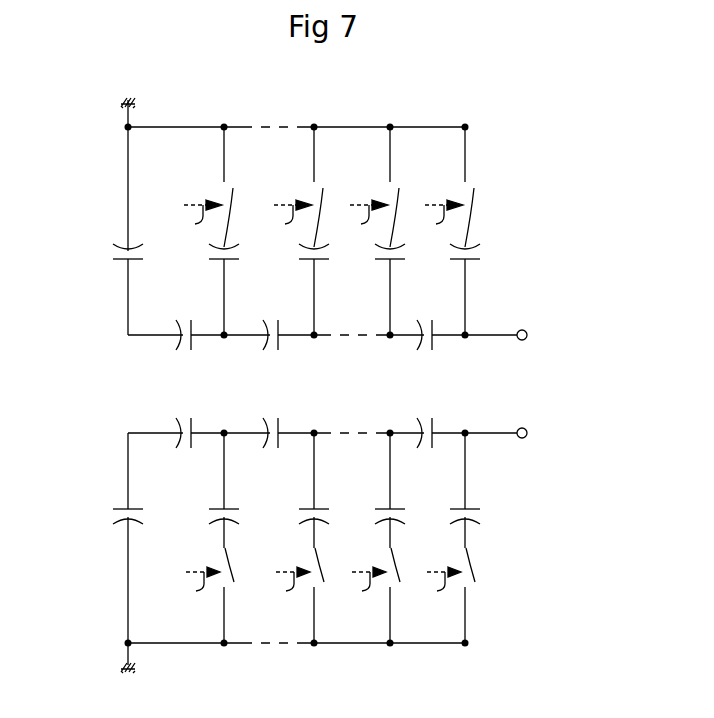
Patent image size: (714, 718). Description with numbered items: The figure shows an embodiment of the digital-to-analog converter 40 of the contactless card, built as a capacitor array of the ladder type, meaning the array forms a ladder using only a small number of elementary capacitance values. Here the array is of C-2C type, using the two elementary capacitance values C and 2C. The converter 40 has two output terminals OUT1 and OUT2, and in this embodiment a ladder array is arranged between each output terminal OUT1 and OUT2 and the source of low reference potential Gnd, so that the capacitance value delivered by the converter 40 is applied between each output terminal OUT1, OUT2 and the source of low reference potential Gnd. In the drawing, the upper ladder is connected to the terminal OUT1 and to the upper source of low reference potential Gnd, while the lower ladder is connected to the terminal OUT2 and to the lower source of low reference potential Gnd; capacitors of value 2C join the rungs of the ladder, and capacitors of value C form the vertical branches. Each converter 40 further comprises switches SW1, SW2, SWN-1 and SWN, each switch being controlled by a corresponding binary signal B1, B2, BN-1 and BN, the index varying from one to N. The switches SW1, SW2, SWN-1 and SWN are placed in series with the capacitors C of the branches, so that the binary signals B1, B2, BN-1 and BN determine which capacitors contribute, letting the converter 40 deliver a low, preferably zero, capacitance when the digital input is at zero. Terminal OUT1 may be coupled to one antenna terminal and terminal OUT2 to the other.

The digital-to-analog converter 40 is at (73, 190).
The source of low reference potential Gnd is at (124, 100).
The output terminal OUT1 is at (524, 330).
The output terminal OUT2 is at (524, 438).
The elementary capacitance value C is at (278, 384).
The elementary capacitance value 2C is at (298, 384).
The switch SW1 is at (234, 190).
The switch SW2 is at (324, 190).
The switch SWN-1 is at (400, 190).
The switch SWN is at (475, 190).
The binary signal B1 is at (198, 406).
The binary signal B2 is at (281, 406).
The binary signal BN-1 is at (362, 406).
The binary signal BN is at (438, 406).